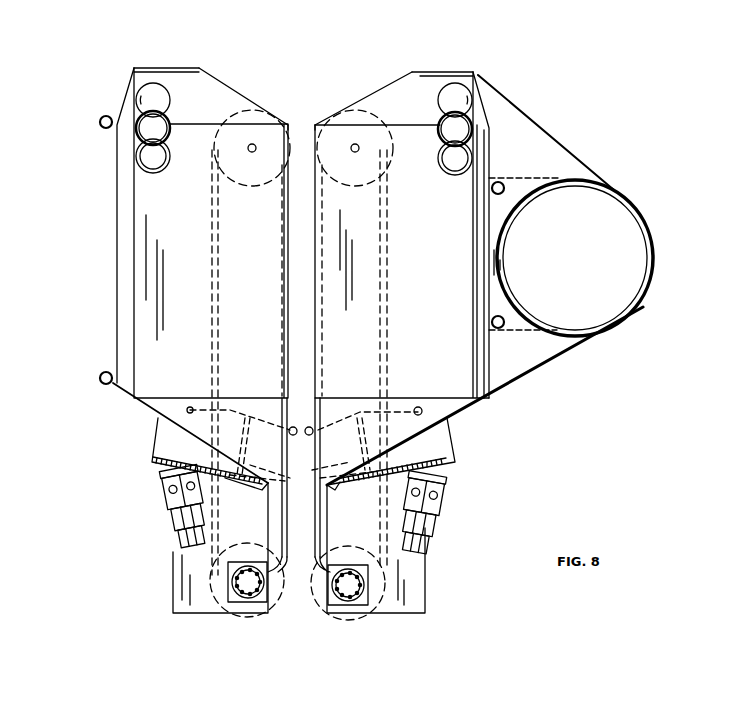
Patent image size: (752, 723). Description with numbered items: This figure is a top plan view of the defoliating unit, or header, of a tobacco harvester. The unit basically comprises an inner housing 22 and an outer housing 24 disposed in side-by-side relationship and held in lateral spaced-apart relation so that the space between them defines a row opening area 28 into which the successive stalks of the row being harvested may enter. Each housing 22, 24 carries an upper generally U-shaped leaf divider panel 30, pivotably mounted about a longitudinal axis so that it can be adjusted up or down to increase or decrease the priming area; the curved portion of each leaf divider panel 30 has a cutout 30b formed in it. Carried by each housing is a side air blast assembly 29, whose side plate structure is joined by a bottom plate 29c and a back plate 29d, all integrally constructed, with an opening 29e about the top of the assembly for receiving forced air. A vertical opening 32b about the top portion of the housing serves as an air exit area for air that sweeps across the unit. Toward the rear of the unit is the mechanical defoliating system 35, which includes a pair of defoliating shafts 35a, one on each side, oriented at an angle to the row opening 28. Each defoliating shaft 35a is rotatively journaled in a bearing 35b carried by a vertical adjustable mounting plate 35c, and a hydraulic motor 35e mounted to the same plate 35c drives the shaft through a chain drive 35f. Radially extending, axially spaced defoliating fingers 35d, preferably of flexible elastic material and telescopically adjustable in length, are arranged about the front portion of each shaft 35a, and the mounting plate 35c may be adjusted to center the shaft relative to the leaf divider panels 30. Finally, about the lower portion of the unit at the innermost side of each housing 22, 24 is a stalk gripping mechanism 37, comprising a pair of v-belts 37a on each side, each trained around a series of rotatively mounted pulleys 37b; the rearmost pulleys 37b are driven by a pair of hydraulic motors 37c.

The inner housing 22 is at (488, 406).
The outer housing 24 is at (134, 410).
The row opening area 28 is at (303, 122).
The side air blast assembly 29 is at (148, 60).
The bottom plate 29c is at (150, 70).
The back plate 29d is at (130, 92).
The opening 29e is at (157, 103).
The leaf divider panel 30 is at (152, 237).
The cutout 30b is at (150, 135).
The vertical opening 32b is at (614, 240).
The mechanical defoliating system 35 is at (155, 553).
The defoliating shaft 35a is at (301, 477).
The bearing 35b is at (230, 482).
The vertical adjustable mounting plate 35c is at (262, 490).
The defoliating fingers 35d is at (309, 427).
The hydraulic motor 35e is at (160, 508).
The chain drive 35f is at (186, 460).
The stalk gripping mechanism 37 is at (316, 606).
The v-belts 37a is at (212, 243).
The pulleys 37b is at (262, 120).
The hydraulic motors 37c is at (232, 597).